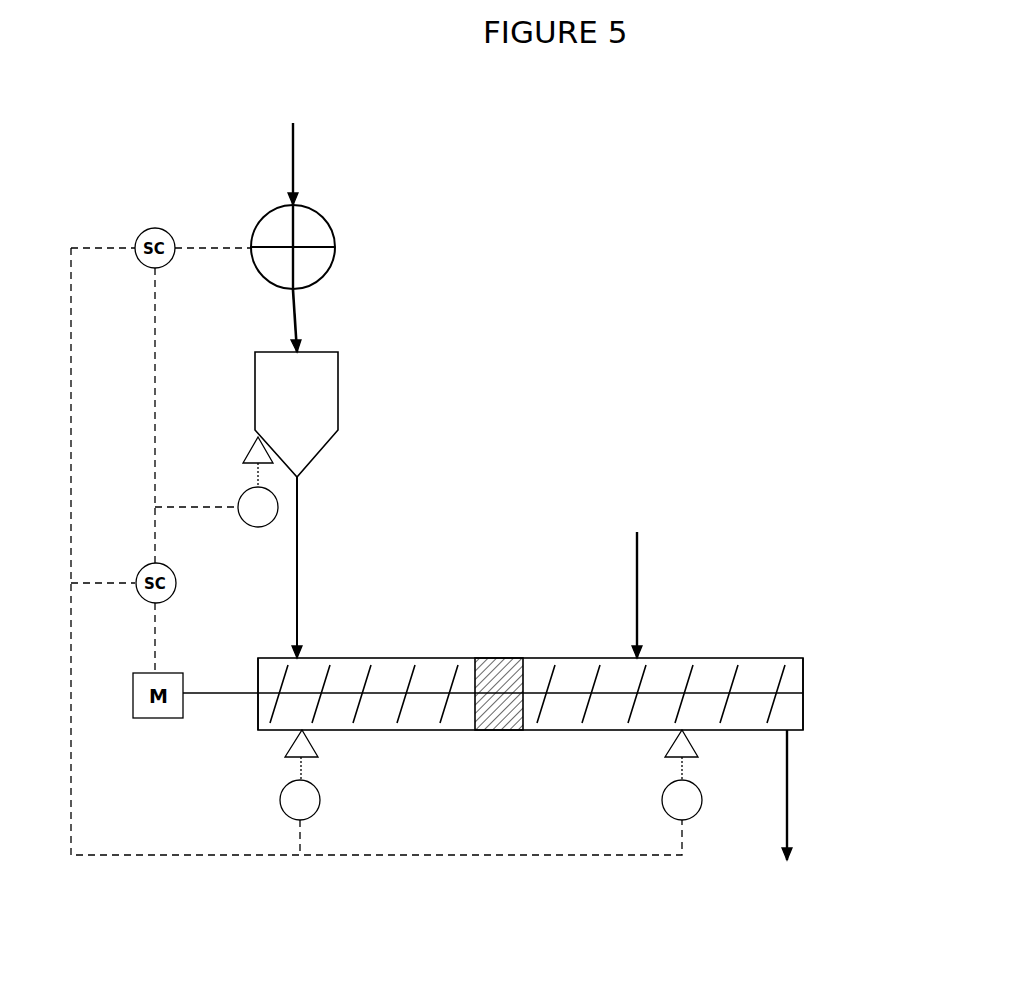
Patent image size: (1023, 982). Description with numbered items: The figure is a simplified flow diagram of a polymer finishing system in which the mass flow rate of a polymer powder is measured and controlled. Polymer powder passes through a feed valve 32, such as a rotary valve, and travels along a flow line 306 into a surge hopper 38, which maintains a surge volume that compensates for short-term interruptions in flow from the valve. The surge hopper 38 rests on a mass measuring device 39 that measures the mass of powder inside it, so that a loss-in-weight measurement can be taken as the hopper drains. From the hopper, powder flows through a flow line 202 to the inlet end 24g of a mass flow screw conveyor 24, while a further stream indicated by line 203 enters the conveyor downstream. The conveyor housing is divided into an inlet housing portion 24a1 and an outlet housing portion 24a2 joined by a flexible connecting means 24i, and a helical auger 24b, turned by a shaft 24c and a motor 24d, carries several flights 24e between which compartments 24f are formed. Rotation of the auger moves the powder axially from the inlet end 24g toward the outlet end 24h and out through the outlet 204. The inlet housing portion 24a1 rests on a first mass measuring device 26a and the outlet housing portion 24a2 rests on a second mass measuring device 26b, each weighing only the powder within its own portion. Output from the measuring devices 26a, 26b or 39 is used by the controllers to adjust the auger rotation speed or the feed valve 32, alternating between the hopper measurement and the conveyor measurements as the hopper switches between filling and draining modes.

The feed valve 32 is at (332, 226).
The flow line 306 is at (293, 318).
The surge hopper 38 is at (340, 392).
The mass measuring device 39 is at (240, 488).
The flow line 202 is at (295, 586).
The second feed line into extruder 203 is at (640, 588).
The outlet 204 is at (788, 813).
The mass flow screw conveyor 24 is at (803, 650).
The inlet housing portion 24a1 is at (428, 730).
The outlet housing portion 24a2 is at (595, 660).
The helical auger 24b is at (617, 698).
The shaft 24c is at (247, 693).
The motor 24d is at (145, 718).
The flights 24e is at (407, 688).
The compartments 24f is at (558, 712).
The inlet end 24g is at (257, 652).
The outlet end 24h is at (810, 712).
The flexible connecting means 24i is at (493, 673).
The first mass measuring device 26a is at (281, 818).
The second mass measuring device 26b is at (667, 814).